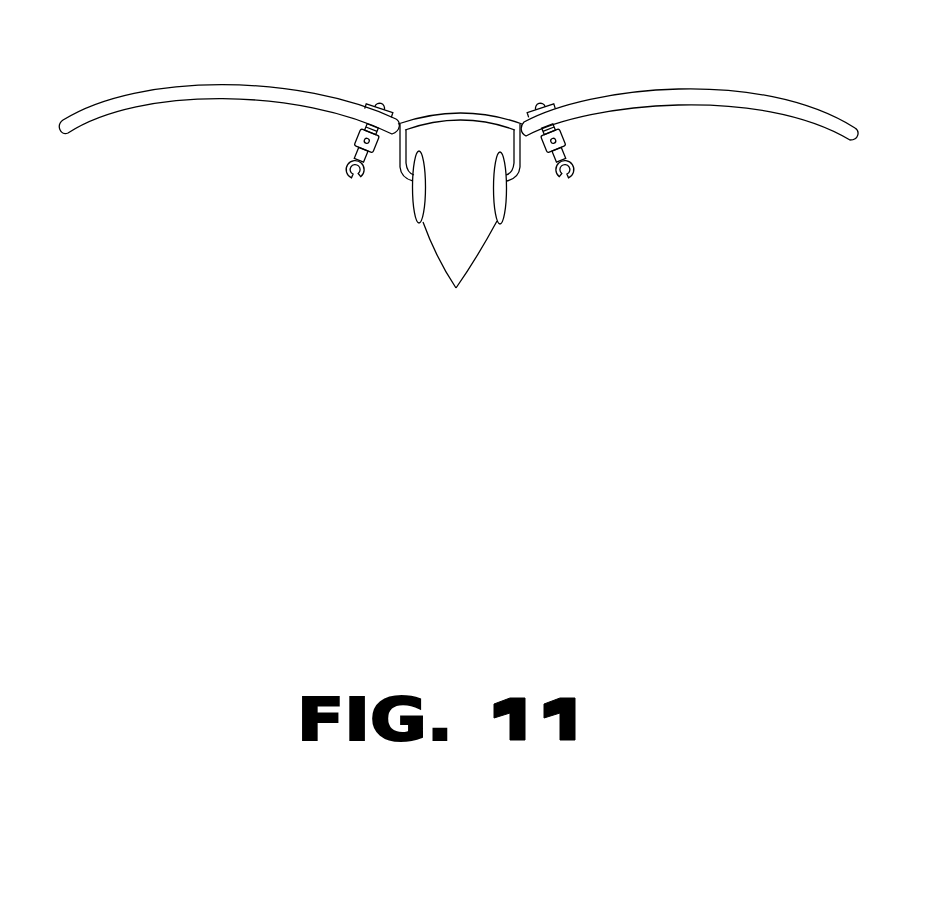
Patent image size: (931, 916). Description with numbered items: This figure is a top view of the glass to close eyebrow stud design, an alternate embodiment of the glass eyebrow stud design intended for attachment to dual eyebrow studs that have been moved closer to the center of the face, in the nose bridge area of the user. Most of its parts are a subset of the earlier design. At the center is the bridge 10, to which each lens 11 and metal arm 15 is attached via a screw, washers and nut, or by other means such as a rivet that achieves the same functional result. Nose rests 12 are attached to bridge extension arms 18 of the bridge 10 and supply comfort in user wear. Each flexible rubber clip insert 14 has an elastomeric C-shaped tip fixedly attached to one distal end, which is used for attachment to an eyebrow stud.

The bridge 10 is at (463, 111).
The lens 11 is at (286, 84).
The nose rests 12 is at (456, 288).
The flexible rubber clip insert 14 is at (358, 179).
The metal arm 15 is at (352, 141).
The bridge extension arms 18 is at (401, 175).